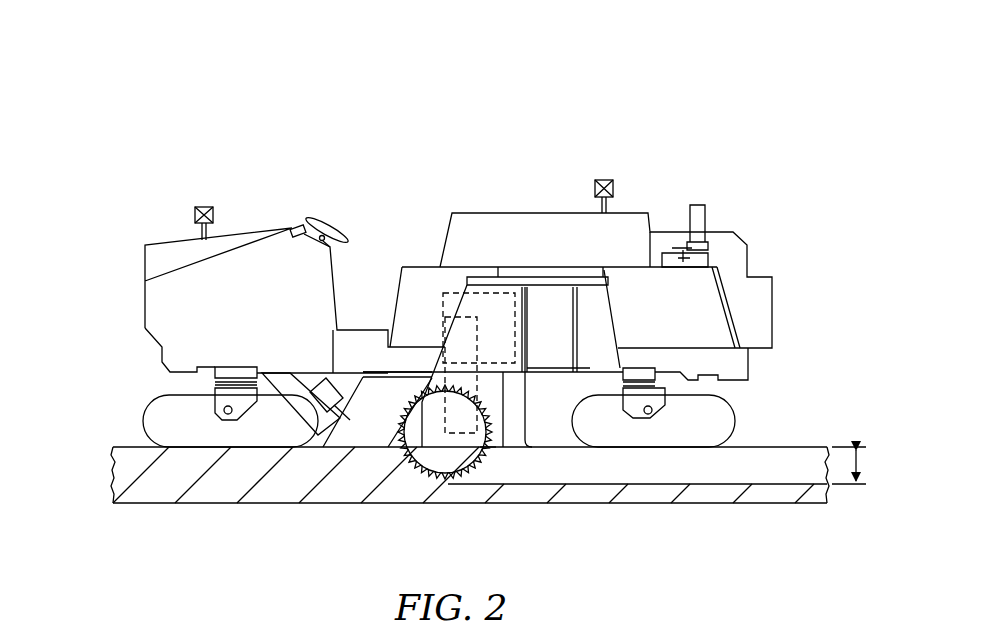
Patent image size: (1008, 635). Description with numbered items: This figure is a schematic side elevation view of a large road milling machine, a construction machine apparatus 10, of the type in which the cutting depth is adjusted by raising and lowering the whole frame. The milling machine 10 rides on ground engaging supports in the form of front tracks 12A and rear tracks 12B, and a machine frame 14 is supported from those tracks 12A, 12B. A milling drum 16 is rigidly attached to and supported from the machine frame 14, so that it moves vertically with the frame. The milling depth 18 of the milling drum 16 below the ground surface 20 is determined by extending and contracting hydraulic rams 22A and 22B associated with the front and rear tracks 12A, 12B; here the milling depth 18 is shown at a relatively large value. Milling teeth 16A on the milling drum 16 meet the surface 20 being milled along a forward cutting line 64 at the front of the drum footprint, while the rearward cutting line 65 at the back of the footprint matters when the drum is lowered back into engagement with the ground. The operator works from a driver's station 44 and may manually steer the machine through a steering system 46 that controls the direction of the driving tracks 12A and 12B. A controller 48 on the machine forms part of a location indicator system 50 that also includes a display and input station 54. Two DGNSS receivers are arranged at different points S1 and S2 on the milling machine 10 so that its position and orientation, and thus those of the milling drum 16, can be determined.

The construction machine apparatus 10 is at (433, 172).
The front tracks 12A is at (146, 416).
The rear tracks 12B is at (731, 420).
The machine frame 14 is at (640, 290).
The milling drum 16 is at (437, 462).
The milling teeth 16A is at (484, 462).
The milling depth 18 is at (859, 463).
The ground surface 20 is at (113, 447).
The hydraulic ram 22A is at (228, 366).
The hydraulic ram 22B is at (640, 369).
The driver's station 44 is at (378, 245).
The steering system 46 is at (318, 222).
The controller 48 is at (228, 196).
The location indicator system 50 is at (228, 196).
The display and input station 54 is at (296, 225).
The forward cutting line 64 is at (457, 303).
The rearward cutting line 65 is at (488, 450).
The point S1 is at (606, 180).
The point S2 is at (193, 213).